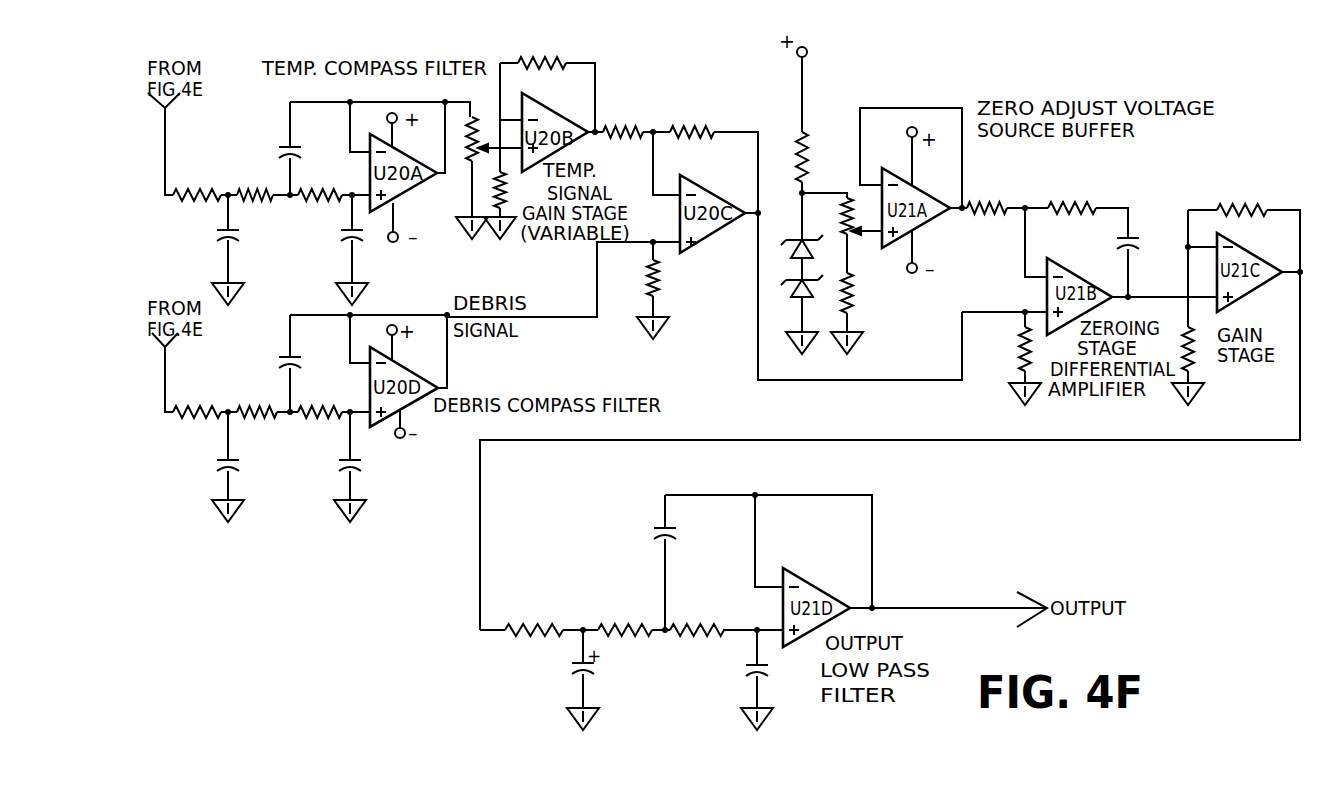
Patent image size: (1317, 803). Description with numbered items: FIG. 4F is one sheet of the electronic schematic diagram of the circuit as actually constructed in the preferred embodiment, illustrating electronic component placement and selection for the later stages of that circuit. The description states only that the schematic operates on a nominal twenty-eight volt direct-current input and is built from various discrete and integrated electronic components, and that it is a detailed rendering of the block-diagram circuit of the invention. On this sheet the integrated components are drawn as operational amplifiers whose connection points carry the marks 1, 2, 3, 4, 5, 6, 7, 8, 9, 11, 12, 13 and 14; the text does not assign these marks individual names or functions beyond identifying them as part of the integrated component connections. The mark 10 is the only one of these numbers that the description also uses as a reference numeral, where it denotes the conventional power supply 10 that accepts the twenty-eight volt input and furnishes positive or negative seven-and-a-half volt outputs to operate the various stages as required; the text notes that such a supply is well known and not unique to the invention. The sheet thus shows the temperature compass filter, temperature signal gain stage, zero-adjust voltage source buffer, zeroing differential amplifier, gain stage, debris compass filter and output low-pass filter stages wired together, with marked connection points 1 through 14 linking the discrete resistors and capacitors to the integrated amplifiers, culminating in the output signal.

The op-amp output pin / potentiometer end terminal 1 is at (700, 185).
The op-amp inverting input pin / potentiometer wiper 2 is at (656, 165).
The op-amp non-inverting input pin / potentiometer end terminal 3 is at (612, 183).
The op-amp positive supply pin 4 is at (643, 149).
The op-amp non-inverting input pin 5 is at (773, 219).
The op-amp inverting input pin 6 is at (773, 187).
The op-amp output pin 7 is at (863, 202).
The op-amp output pin 8 is at (1020, 233).
The op-amp inverting input pin 9 is at (935, 189).
The power supply 10 is at (832, 267).
The op-amp negative supply pin 11 is at (647, 238).
The op-amp non-inverting input pin 12 is at (562, 508).
The op-amp inverting input pin 13 is at (566, 451).
The op-amp output pin 14 is at (736, 471).